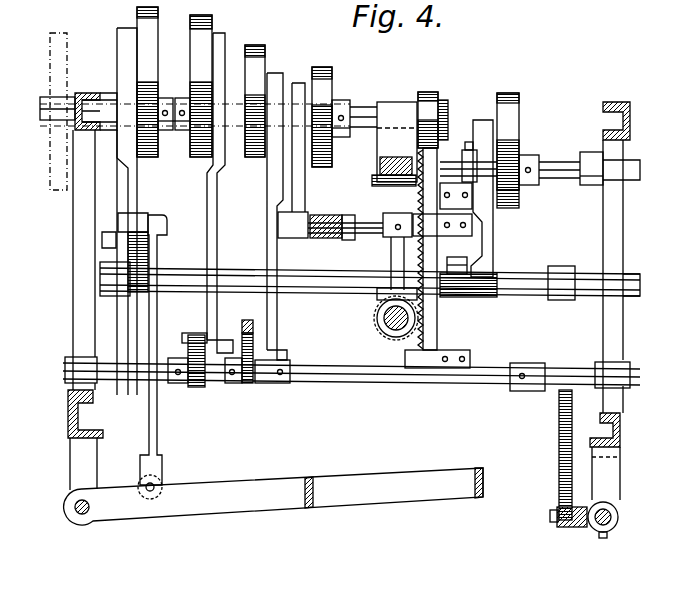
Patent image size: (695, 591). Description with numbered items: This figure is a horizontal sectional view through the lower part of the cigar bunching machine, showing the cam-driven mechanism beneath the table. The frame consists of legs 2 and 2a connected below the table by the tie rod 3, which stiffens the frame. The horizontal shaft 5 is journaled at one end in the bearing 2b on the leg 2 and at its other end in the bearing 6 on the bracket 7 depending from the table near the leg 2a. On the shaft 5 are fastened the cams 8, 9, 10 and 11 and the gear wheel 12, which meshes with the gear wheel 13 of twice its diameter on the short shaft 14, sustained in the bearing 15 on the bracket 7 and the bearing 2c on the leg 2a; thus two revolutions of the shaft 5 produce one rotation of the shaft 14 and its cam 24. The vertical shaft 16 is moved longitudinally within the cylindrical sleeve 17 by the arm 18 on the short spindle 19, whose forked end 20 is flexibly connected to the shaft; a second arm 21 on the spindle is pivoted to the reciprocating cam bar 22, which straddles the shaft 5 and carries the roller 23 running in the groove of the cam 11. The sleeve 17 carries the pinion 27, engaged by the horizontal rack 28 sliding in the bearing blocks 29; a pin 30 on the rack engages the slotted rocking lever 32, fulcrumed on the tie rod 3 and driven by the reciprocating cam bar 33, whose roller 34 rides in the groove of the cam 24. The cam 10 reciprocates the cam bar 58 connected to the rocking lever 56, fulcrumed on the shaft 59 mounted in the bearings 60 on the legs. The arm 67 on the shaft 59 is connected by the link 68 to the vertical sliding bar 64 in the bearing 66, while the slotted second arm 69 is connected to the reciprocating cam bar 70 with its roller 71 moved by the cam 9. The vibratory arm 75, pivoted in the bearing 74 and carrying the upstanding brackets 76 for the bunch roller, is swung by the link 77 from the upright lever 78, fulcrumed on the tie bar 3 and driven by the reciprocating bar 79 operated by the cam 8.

The leg 2 is at (78, 322).
The leg 2a is at (631, 122).
The bearing 2b is at (34, 168).
The bearing 2c is at (593, 165).
The tie rod 3 is at (312, 285).
The horizontal shaft 5 is at (360, 108).
The bearing 6 is at (397, 124).
The bracket 7 is at (393, 158).
The cam 8 is at (156, 27).
The cam 9 is at (206, 30).
The cam 10 is at (255, 65).
The cam 11 is at (321, 76).
The gear wheel 12 is at (428, 92).
The gear wheel 13 is at (445, 122).
The short shaft 14 is at (561, 172).
The bearing 15 is at (392, 180).
The vertical shaft 16 is at (388, 340).
The cylindrical sleeve 17 is at (383, 323).
The arm 18 is at (392, 258).
The short spindle 19 is at (362, 225).
The forked end 20 is at (378, 297).
The second arm 21 is at (303, 210).
The reciprocating cam bar 22 is at (280, 175).
The roller 23 is at (330, 148).
The cam 24 is at (510, 116).
The pinion 27 is at (437, 340).
The rack 28 is at (438, 320).
The bearing block 29 is at (440, 384).
The pin 30 is at (467, 263).
The rocking lever 32 is at (462, 296).
The reciprocating cam bar 33 is at (483, 242).
The roller 34 is at (519, 202).
The rocking lever 56 is at (385, 342).
The cam bar 58 is at (254, 249).
The shaft 59 is at (331, 373).
The bearing 60 is at (90, 367).
The vertical sliding bar 64 is at (619, 513).
The bearing 66 is at (607, 483).
The arm 67 is at (555, 455).
The link 68 is at (575, 528).
The second arm 69 is at (195, 388).
The reciprocating cam bar 70 is at (207, 256).
The roller 71 is at (195, 138).
The bearing 74 is at (73, 480).
The vibratory arm 75 is at (258, 504).
The upstanding bracket 76 is at (315, 489).
The link 77 is at (150, 403).
The upright lever 78 is at (125, 266).
The reciprocating bar 79 is at (129, 186).